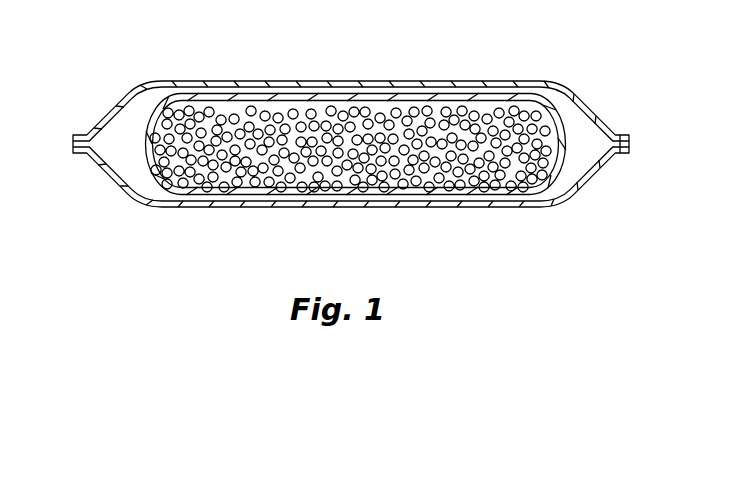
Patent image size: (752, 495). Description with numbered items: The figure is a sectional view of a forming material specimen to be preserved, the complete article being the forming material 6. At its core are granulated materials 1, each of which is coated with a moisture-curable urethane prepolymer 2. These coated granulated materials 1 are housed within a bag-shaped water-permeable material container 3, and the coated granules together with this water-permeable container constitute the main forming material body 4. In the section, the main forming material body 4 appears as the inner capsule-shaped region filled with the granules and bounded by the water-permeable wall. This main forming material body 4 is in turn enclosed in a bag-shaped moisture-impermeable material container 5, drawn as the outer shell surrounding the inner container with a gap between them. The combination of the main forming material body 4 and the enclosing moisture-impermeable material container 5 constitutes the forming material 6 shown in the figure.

The granulated materials 1 is at (351, 145).
The moisture-curable urethane prepolymer 2 is at (350, 125).
The bag-shaped water-permeable material container 3 is at (446, 100).
The main forming material body 4 is at (570, 112).
The bag-shaped moisture-impermeable material container 5 is at (265, 202).
The forming material 6 is at (494, 215).